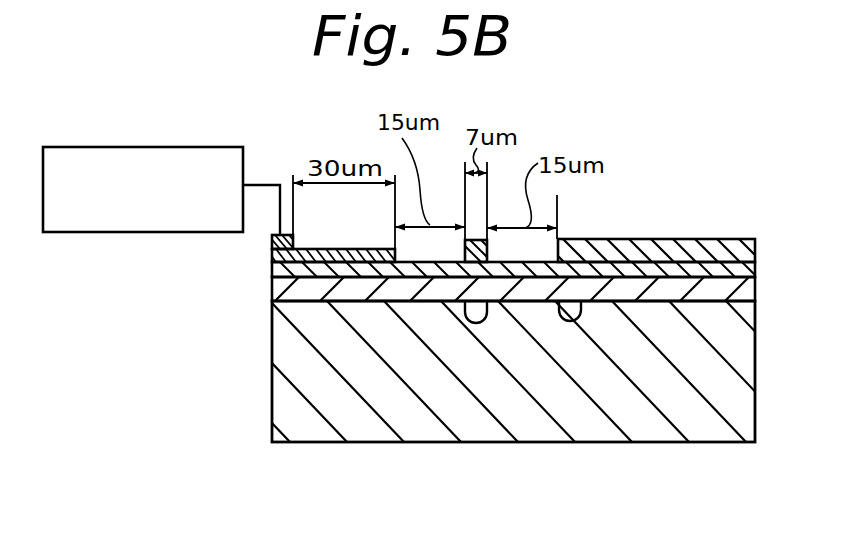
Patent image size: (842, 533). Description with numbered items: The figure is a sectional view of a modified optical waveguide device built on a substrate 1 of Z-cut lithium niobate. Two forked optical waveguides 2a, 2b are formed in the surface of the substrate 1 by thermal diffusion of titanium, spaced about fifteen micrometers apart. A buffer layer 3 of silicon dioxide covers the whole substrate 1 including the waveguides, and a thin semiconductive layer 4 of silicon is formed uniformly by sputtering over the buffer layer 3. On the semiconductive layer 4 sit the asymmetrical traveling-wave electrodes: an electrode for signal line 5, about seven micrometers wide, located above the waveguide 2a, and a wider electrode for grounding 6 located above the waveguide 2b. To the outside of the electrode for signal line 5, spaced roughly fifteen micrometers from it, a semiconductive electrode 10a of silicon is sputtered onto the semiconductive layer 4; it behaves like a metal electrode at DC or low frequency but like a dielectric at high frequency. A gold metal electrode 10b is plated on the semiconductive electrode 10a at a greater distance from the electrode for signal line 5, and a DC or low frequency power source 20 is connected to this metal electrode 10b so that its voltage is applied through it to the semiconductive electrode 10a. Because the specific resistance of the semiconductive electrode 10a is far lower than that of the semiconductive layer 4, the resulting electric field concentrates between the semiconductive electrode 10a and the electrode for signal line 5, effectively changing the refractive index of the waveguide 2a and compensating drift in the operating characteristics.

The substrate 1 is at (747, 387).
The forked optical waveguide 2a is at (473, 323).
The forked optical waveguide 2b is at (568, 321).
The buffer layer 3 is at (750, 290).
The semiconductive layer 4 is at (743, 268).
The electrode for signal line 5 is at (465, 250).
The electrode for grounding 6 is at (670, 247).
The semiconductive electrode 10a is at (340, 249).
The metal electrode 10b is at (287, 235).
The power source 20 is at (137, 232).